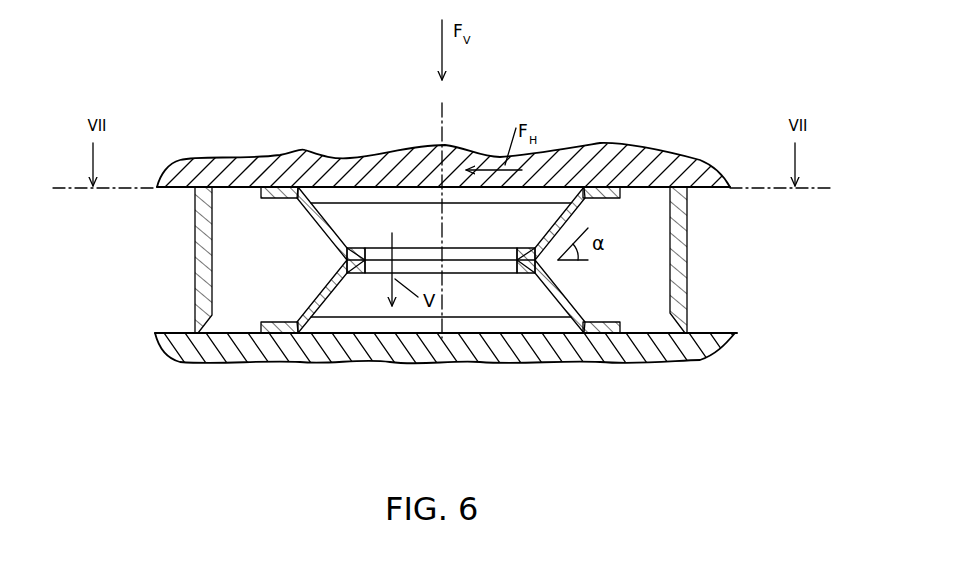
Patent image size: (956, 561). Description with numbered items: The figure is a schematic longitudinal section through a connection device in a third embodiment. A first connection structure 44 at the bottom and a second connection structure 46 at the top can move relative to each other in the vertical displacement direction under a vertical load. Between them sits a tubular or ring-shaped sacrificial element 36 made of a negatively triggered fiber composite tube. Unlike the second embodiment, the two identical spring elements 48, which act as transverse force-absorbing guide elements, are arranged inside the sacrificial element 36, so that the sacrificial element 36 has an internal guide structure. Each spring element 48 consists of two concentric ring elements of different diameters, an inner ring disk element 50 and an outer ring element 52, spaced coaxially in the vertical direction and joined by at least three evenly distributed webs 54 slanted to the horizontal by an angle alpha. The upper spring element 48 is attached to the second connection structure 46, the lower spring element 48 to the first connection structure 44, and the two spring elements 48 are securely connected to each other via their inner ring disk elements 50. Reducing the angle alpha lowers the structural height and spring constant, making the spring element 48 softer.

The sacrificial element 36 is at (197, 215).
The first connection structure 44 is at (652, 350).
The second connection structure 46 is at (208, 165).
The spring element 48 is at (430, 267).
The inner ring disk element 50 is at (353, 248).
The outer ring element 52 is at (273, 322).
The web 54 is at (310, 217).